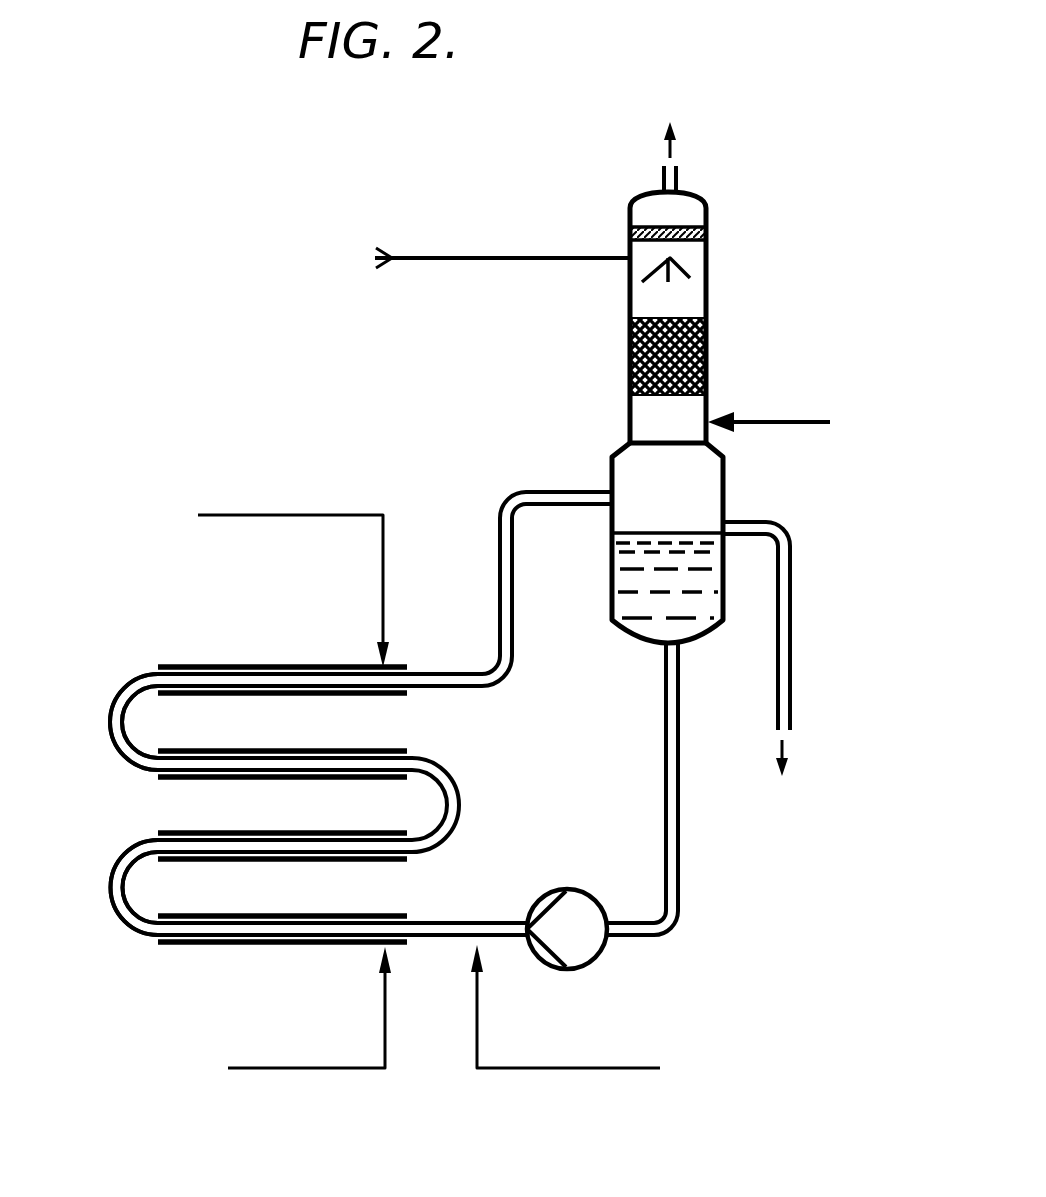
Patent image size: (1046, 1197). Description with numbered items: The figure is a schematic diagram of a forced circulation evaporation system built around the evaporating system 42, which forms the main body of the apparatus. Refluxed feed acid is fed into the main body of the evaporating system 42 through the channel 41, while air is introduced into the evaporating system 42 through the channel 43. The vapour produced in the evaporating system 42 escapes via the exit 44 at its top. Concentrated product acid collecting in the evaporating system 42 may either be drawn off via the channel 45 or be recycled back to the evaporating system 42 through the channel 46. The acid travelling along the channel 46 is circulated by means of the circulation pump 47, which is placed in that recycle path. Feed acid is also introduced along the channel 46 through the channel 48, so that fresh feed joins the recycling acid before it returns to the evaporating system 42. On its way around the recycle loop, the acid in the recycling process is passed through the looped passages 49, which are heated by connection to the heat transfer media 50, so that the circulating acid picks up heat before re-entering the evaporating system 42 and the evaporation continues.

The channel 41 is at (428, 258).
The evaporating system 42 is at (628, 350).
The channel 43 is at (787, 418).
The exit 44 is at (675, 172).
The channel 45 is at (790, 583).
The channel 46 is at (666, 688).
The circulation pump 47 is at (597, 956).
The channel 48 is at (570, 1070).
The looped passages 49 is at (120, 692).
The heat transfer media 50 is at (262, 513).